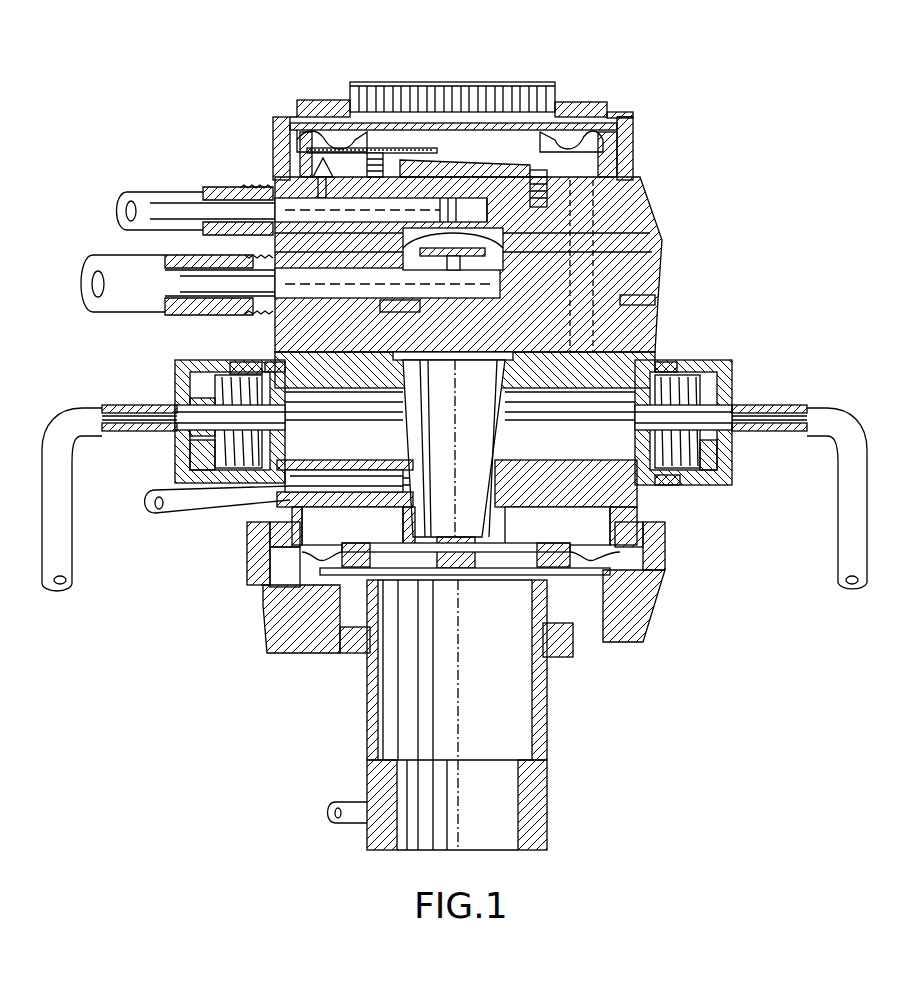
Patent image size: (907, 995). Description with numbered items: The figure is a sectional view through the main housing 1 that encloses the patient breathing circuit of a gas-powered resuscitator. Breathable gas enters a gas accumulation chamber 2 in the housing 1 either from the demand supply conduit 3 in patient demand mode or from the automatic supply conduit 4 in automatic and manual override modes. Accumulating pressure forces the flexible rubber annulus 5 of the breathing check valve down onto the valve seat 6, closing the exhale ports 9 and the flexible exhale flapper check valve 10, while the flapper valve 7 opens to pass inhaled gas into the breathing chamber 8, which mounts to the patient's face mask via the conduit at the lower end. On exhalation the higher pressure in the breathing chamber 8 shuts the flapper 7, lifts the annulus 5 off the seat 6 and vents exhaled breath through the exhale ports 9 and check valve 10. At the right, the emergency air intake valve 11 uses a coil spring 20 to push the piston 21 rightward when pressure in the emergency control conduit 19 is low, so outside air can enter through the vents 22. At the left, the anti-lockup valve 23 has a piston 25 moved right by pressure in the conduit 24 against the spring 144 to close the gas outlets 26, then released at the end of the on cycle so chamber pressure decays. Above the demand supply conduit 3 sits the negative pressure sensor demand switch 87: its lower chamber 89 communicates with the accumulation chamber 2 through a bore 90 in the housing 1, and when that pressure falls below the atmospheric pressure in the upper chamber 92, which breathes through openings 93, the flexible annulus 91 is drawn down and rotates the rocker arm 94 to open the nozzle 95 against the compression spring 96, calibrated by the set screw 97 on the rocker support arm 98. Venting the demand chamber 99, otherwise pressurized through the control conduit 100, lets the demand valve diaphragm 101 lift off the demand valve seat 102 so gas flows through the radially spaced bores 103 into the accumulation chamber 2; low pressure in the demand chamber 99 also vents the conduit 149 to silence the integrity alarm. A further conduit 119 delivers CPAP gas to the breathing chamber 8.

The main housing 1 is at (676, 212).
The gas accumulation chamber 2 is at (466, 422).
The demand supply conduit 3 is at (120, 312).
The automatic supply conduit 4 is at (166, 513).
The flexible rubber annulus 5 is at (300, 588).
The valve seat 6 is at (528, 572).
The flapper valve 7 is at (432, 570).
The breathing chamber 8 is at (500, 744).
The exhale ports 9 is at (290, 617).
The flexible exhale flapper check valve 10 is at (350, 650).
The emergency air intake valve 11 is at (716, 353).
The emergency control conduit 19 is at (838, 578).
The coil spring 20 is at (700, 398).
The piston 21 is at (702, 462).
The vents 22 is at (666, 362).
The anti-lockup valve 23 is at (178, 376).
The conduit 24 is at (62, 540).
The piston 25 is at (196, 456).
The gas outlets 26 is at (237, 372).
The negative pressure sensor demand switch 87 is at (266, 130).
The lower chamber 89 is at (610, 152).
The bore 90 is at (650, 250).
The flexible annulus 91 is at (620, 126).
The upper chamber 92 is at (560, 100).
The openings 93 is at (305, 108).
The rocker arm 94 is at (437, 162).
The nozzle 95 is at (312, 174).
The compression spring 96 is at (437, 158).
The set screw 97 is at (365, 158).
The rocker support arm 98 is at (503, 162).
The demand chamber 99 is at (222, 262).
The control conduit 100 is at (130, 200).
The demand valve diaphragm 101 is at (486, 252).
The demand valve seat 102 is at (462, 263).
The radially spaced bores 103 is at (655, 300).
The conduit 119 is at (350, 810).
The spring 144 is at (200, 418).
The conduit 149 is at (312, 442).